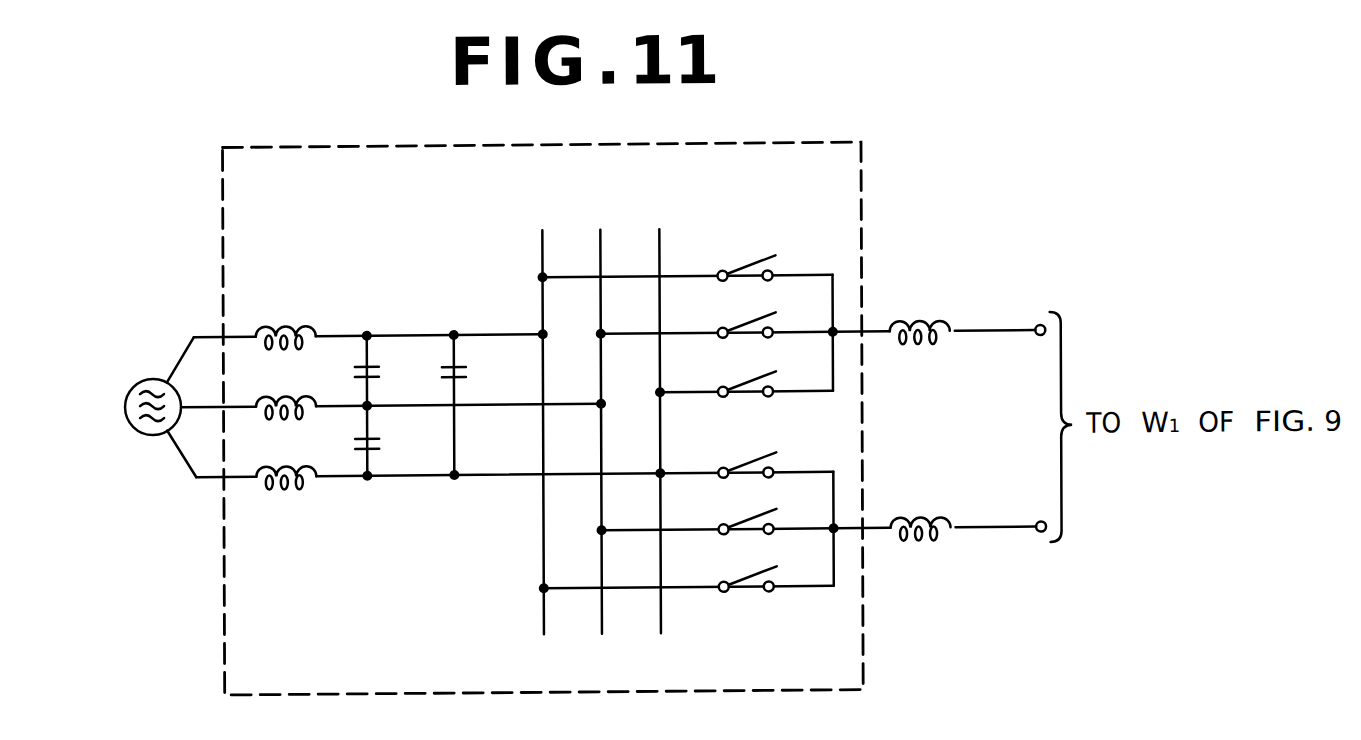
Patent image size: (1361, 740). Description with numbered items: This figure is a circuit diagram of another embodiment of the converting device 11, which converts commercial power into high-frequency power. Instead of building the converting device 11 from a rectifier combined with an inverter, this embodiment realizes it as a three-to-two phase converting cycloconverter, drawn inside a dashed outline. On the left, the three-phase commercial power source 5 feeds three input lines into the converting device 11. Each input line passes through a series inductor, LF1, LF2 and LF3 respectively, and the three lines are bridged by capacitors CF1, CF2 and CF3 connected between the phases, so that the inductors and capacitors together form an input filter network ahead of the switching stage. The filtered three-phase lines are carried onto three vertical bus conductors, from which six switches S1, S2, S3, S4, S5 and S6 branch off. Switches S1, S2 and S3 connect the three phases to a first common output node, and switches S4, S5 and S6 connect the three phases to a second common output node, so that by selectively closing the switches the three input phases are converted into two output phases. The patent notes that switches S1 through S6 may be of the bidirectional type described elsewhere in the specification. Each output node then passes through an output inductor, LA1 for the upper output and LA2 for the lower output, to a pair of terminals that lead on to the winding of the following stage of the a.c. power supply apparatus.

The converting device 11 is at (222, 208).
The commercial power source 5 is at (129, 390).
The filter inductor LF1 is at (286, 322).
The filter inductor LF2 is at (286, 391).
The filter inductor LF3 is at (286, 463).
The filter capacitor CF1 is at (392, 377).
The filter capacitor CF2 is at (392, 448).
The filter capacitor CF3 is at (480, 378).
The switch S1 is at (728, 258).
The switch S2 is at (729, 317).
The switch S3 is at (729, 376).
The switch S4 is at (729, 457).
The switch S5 is at (729, 514).
The switch S6 is at (730, 572).
The output inductor LA1 is at (920, 316).
The output inductor LA2 is at (920, 513).